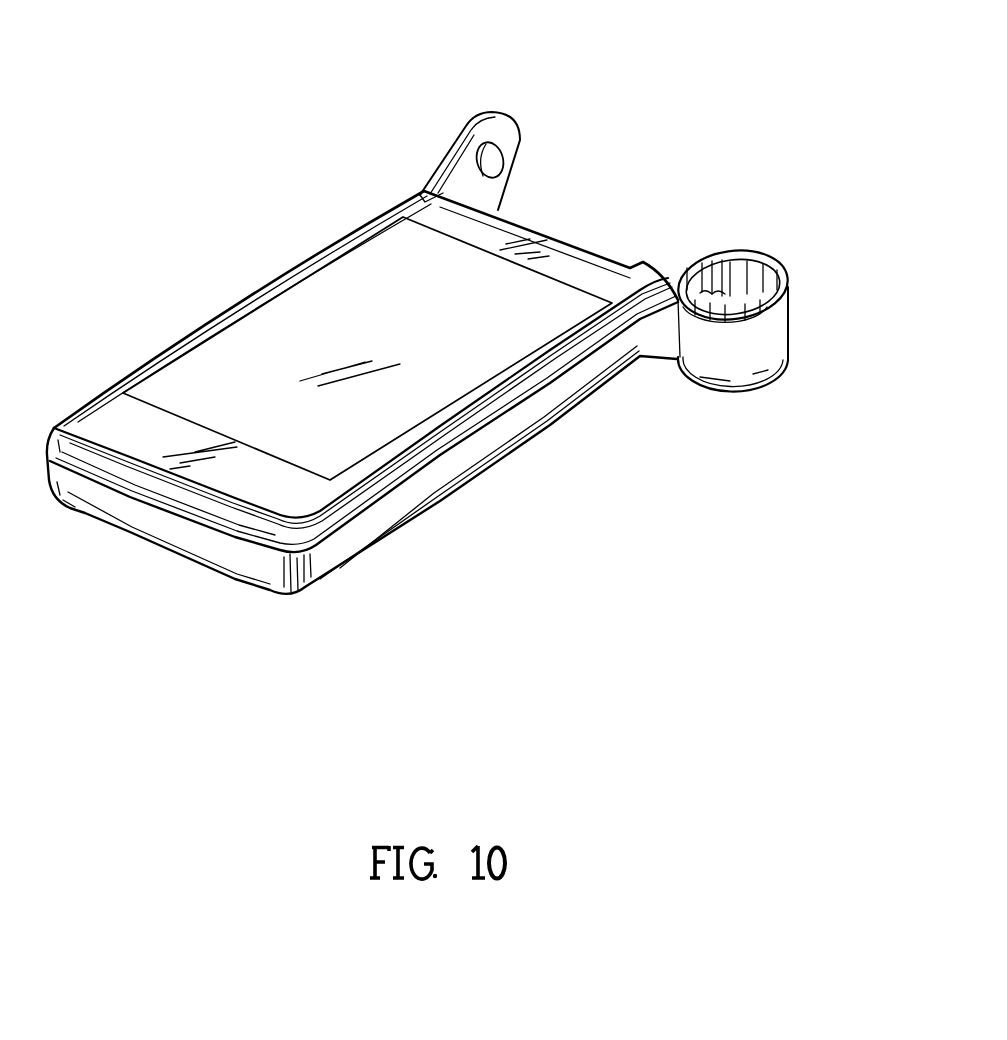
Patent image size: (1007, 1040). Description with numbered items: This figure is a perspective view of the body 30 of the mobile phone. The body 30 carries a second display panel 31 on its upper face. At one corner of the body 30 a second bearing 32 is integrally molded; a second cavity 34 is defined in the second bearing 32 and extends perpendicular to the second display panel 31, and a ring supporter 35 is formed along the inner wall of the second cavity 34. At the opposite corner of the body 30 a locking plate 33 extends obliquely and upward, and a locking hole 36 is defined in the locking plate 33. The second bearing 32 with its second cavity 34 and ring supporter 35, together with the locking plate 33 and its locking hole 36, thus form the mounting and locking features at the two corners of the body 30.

The body 30 is at (281, 84).
The second display panel 31 is at (410, 310).
The second bearing 32 is at (788, 313).
The locking plate 33 is at (487, 110).
The second cavity 34 is at (742, 290).
The ring supporter 35 is at (722, 290).
The locking hole 36 is at (500, 160).